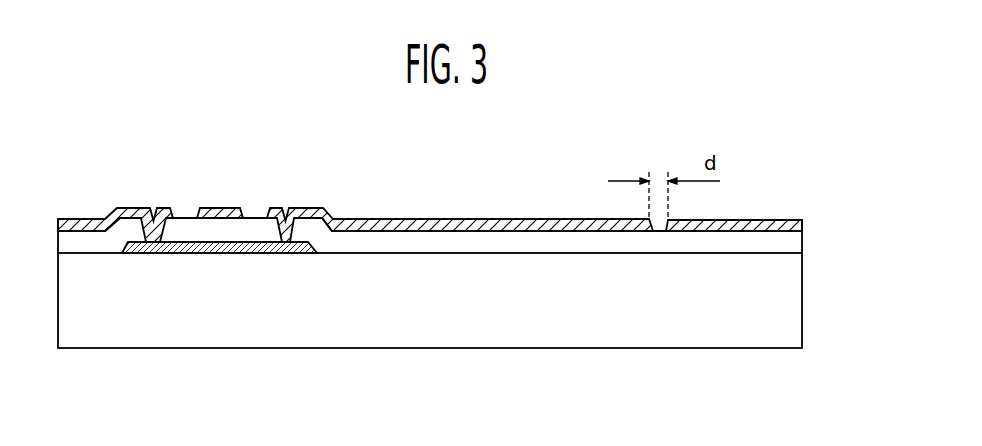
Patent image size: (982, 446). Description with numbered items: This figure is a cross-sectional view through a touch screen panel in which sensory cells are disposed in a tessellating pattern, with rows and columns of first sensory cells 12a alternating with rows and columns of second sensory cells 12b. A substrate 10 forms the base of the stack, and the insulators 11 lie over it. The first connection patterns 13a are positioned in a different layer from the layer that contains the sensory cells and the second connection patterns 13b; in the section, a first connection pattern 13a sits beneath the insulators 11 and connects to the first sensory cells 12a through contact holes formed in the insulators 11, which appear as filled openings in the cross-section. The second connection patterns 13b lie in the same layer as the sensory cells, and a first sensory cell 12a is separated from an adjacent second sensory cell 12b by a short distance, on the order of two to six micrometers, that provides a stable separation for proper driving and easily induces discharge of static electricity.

The substrate 10 is at (802, 301).
The insulator 11 is at (802, 241).
The first sensory cell 12a is at (77, 220).
The second sensory cell 12b is at (763, 220).
The first connection pattern 13a is at (252, 250).
The second connection pattern 13b is at (217, 207).